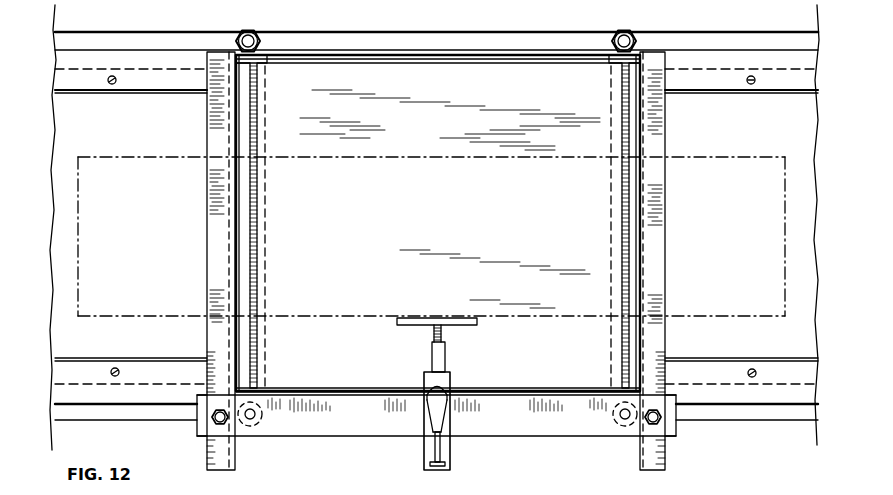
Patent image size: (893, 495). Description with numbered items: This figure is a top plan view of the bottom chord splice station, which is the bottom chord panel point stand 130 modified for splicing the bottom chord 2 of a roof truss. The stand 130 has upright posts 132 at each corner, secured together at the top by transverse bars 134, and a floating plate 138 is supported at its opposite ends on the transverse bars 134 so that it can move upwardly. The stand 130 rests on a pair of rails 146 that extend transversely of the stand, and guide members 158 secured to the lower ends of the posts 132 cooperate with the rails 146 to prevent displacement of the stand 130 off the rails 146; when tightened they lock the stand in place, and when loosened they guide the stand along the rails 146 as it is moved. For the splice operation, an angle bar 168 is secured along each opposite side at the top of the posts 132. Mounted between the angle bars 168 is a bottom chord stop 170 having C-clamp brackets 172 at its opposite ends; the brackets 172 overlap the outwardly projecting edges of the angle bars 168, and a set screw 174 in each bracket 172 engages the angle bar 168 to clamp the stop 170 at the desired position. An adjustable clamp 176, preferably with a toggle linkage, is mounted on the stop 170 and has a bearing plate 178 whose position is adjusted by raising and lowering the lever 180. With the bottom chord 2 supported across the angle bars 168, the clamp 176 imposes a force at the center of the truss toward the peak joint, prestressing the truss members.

The bottom chord 2 is at (368, 166).
The bottom chord panel point stand 130 is at (195, 210).
The upright posts 132 is at (243, 72).
The transverse bars 134 is at (258, 244).
The floating plate 138 is at (280, 278).
The rails 146 is at (723, 82).
The guide members 158 is at (250, 29).
The angle bar 168 is at (212, 127).
The bottom chord stop 170 is at (523, 424).
The C-clamp brackets 172 is at (207, 395).
The set screw 174 is at (213, 419).
The adjustable clamp 176 is at (424, 382).
The bearing plate 178 is at (418, 318).
The lever 180 is at (437, 397).